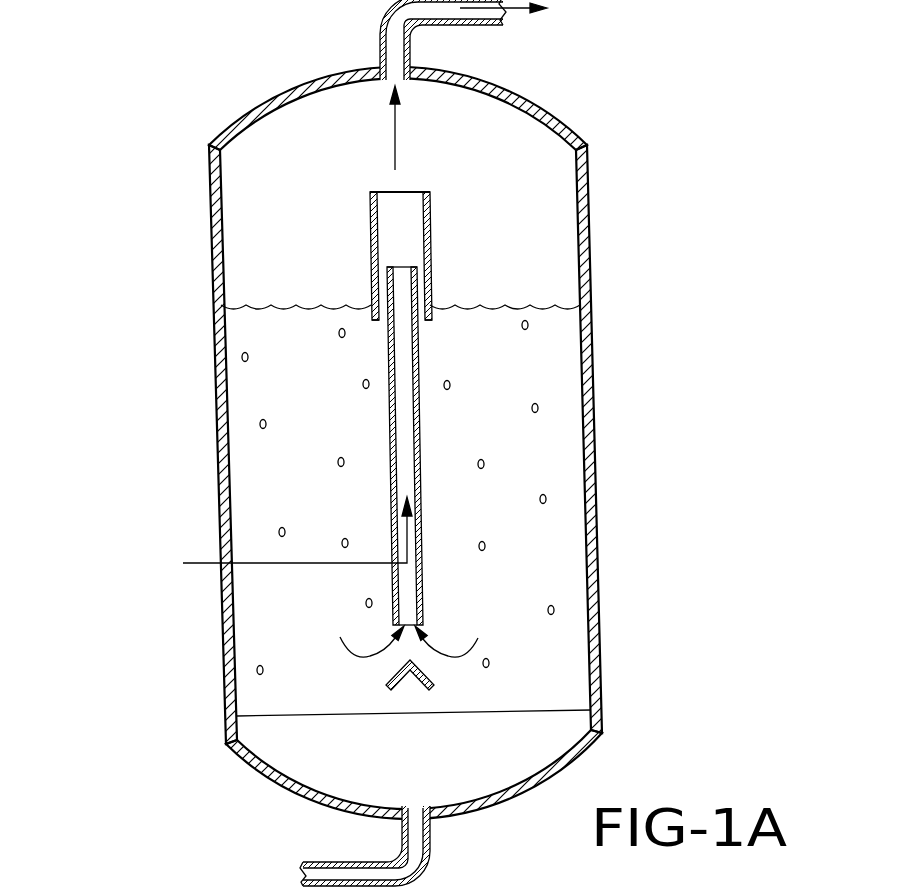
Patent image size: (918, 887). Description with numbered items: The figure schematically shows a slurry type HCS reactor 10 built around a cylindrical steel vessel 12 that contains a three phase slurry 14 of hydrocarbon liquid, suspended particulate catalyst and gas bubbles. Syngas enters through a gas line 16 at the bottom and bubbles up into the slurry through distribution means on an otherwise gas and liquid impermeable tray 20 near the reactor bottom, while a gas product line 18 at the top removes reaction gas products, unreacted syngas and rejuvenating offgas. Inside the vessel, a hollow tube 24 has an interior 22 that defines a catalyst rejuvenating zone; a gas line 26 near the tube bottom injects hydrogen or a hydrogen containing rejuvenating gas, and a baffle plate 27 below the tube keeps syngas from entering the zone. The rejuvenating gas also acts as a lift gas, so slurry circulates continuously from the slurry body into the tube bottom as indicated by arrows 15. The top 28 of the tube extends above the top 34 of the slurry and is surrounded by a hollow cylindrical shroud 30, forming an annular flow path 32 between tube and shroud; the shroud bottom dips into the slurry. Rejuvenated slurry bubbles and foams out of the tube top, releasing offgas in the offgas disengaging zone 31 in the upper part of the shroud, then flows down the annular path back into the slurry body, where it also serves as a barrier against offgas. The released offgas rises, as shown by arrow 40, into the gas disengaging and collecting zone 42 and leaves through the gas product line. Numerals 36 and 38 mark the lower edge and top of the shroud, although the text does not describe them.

The slurry type HCS reactor 10 is at (189, 167).
The cylindrical steel vessel 12 is at (593, 343).
The three phase slurry 14 is at (284, 379).
The arrows 15 is at (340, 637).
The gas line 16 is at (337, 862).
The gas product line 18 is at (470, 24).
The tray 20 is at (553, 718).
The catalyst rejuvenating zone 22 is at (402, 446).
The hollow tube 24 is at (393, 451).
The gas line 26 is at (210, 564).
The baffle plate 27 is at (388, 682).
The top of the rejuvenation tube 28 is at (389, 284).
The shroud 30 is at (393, 258).
The offgas disengaging zone 31 is at (385, 233).
The annular flow path 32 is at (413, 284).
The top of the reactive slurry 34 is at (263, 308).
The cap lower edge 36 is at (426, 319).
The cap top 38 is at (371, 190).
The arrow 40 is at (394, 135).
The gas disengaging and collecting zone 42 is at (455, 129).